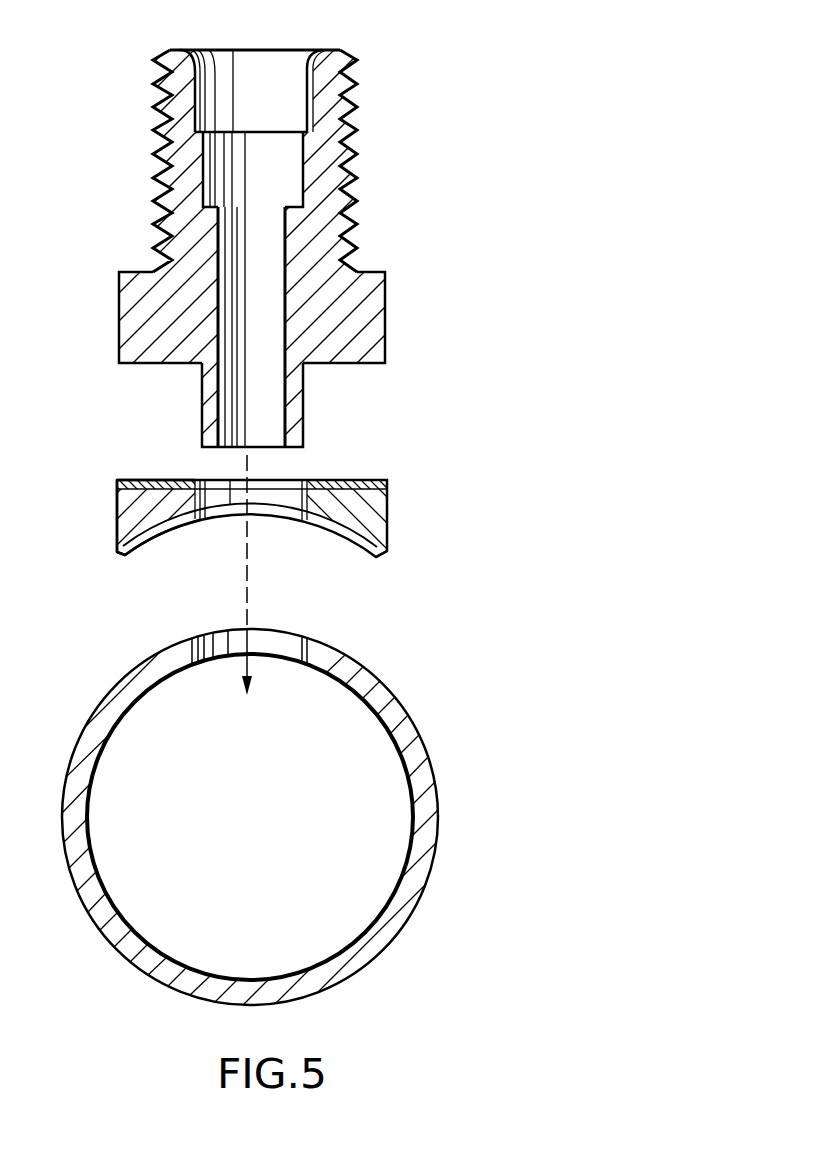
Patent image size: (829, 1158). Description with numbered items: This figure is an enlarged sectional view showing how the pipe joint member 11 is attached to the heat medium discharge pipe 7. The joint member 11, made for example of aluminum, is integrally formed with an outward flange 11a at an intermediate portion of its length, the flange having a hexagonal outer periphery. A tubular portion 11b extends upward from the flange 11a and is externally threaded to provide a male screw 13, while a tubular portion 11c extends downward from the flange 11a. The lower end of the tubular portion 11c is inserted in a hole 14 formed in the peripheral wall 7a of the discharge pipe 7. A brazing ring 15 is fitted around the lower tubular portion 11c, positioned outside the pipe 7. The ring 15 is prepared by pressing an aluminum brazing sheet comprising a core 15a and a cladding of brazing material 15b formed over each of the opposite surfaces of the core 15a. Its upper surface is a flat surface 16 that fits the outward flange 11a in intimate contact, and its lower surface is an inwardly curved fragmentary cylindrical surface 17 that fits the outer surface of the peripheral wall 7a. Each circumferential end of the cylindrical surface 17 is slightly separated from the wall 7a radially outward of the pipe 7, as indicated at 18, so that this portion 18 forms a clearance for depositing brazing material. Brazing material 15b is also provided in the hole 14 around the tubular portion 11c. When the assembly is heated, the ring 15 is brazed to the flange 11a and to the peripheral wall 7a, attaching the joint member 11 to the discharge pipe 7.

The heat medium discharge pipe 7 is at (282, 817).
The peripheral wall 7a is at (424, 822).
The pipe joint member 11 is at (410, 230).
The outward flange 11a is at (378, 308).
The tubular portion 11b is at (324, 60).
The tubular portion 11c is at (303, 408).
The male screw 13 is at (348, 105).
The hole 14 is at (290, 653).
The brazing ring 15 is at (260, 521).
The core 15a is at (120, 515).
The brazing material 15b is at (130, 482).
The flat surface 16 is at (359, 480).
The fragmentary cylindrical surface 17 is at (338, 537).
The clearance portion 18 is at (120, 557).